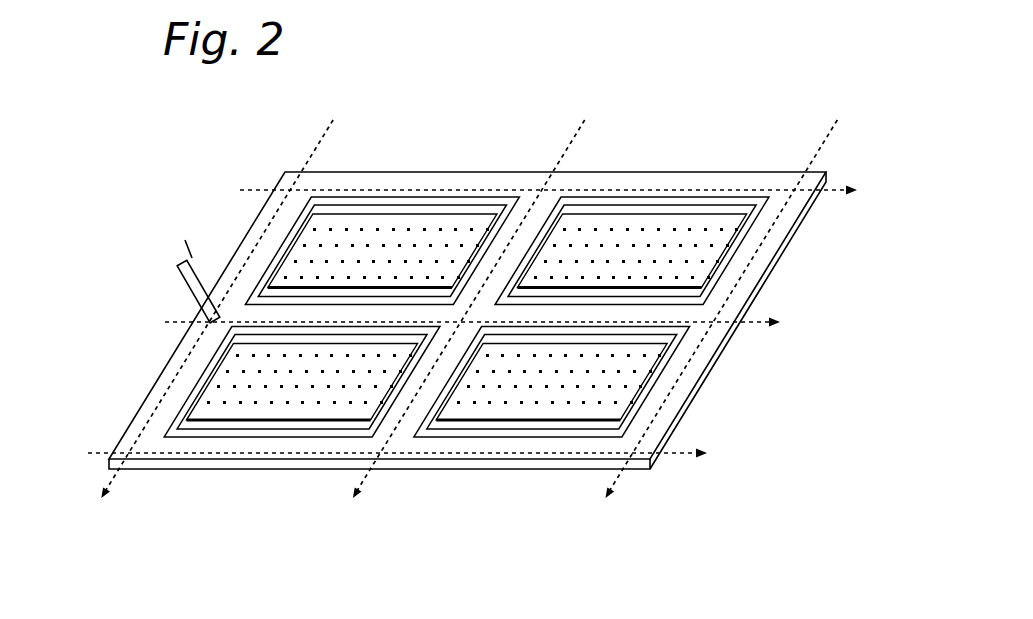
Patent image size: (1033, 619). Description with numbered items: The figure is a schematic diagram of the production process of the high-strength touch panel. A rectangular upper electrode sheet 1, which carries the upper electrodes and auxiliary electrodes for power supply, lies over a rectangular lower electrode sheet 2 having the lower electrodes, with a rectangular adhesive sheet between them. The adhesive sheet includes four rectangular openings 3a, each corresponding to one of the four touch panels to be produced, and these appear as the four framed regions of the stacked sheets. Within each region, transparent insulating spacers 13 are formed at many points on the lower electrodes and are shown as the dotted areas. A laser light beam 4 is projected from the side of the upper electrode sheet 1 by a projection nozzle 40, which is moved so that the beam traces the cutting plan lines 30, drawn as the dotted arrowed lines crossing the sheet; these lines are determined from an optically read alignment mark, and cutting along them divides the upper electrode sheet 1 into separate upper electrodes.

The upper electrode sheet 1 is at (775, 243).
The lower electrode sheet 2 is at (703, 377).
The rectangular openings 3a is at (388, 208).
The transparent insulating spacer 13 is at (548, 357).
The cutting plan lines 30 is at (840, 121).
The laser light beam 4 is at (188, 293).
The projection nozzle 40 is at (192, 254).